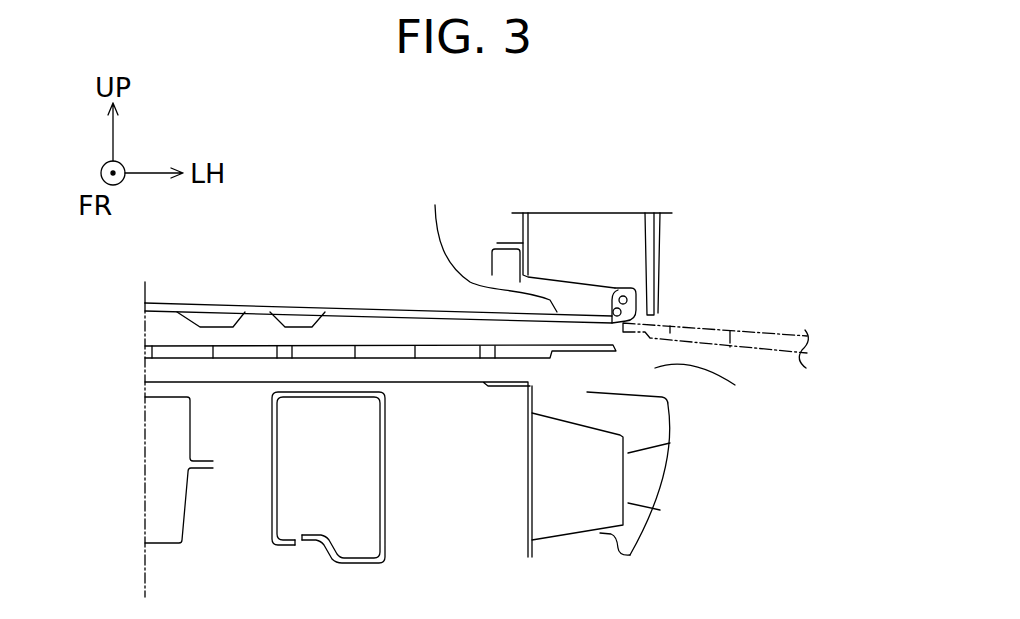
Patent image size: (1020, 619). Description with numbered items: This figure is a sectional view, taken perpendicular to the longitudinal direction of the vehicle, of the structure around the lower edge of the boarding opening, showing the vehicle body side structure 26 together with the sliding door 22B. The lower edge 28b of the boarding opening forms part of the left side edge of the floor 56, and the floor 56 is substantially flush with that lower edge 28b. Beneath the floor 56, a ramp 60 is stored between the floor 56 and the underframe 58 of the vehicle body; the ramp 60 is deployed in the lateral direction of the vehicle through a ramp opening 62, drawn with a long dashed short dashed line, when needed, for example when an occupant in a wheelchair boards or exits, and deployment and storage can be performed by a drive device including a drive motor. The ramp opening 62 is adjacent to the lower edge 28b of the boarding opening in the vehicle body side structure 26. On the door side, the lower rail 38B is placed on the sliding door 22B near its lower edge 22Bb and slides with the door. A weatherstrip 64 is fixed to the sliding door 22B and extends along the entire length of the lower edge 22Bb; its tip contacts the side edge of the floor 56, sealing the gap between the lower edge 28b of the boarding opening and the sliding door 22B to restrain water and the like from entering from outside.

The sliding door 22B is at (692, 228).
The lower edge of sliding door 22Bb is at (656, 312).
The vehicle body side structure 26 is at (715, 433).
The lower edge of boarding opening 28b is at (435, 205).
The lower rail 38B is at (490, 260).
The floor 56 is at (287, 302).
The underframe 58 is at (385, 498).
The ramp 60 is at (378, 346).
The ramp opening 62 is at (735, 385).
The weatherstrip 64 is at (605, 310).